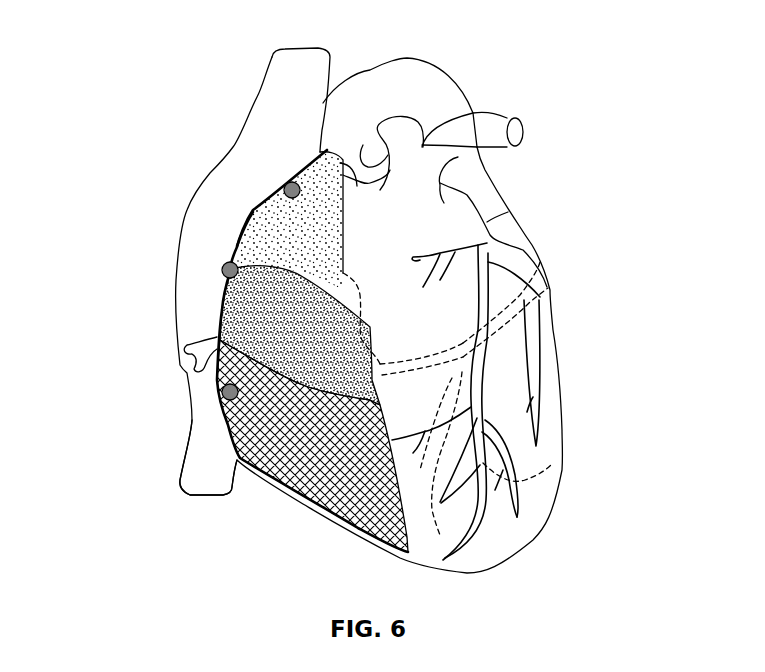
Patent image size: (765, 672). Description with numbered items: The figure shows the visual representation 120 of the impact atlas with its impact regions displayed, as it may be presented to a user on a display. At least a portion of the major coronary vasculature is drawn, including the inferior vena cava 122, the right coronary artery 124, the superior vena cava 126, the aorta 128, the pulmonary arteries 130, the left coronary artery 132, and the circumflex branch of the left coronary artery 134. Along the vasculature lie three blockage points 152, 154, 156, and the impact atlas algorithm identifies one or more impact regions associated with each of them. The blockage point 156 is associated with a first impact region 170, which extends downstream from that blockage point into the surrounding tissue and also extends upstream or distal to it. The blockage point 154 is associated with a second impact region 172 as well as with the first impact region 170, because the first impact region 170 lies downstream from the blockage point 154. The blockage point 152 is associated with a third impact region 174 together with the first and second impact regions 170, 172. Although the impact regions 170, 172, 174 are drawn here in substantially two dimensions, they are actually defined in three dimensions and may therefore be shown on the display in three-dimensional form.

The visual representation 120 is at (136, 30).
The inferior vena cava 122 is at (205, 483).
The right coronary artery 124 is at (255, 215).
The superior vena cava 126 is at (287, 80).
The aorta 128 is at (423, 73).
The pulmonary arteries 130 is at (478, 113).
The left coronary artery 132 is at (508, 213).
The circumflex branch of the left coronary artery 134 is at (455, 360).
The blockage point 152 is at (283, 183).
The blockage point 154 is at (220, 268).
The blockage point 156 is at (220, 397).
The first impact region 170 is at (248, 420).
The second impact region 172 is at (248, 325).
The third impact region 174 is at (243, 247).